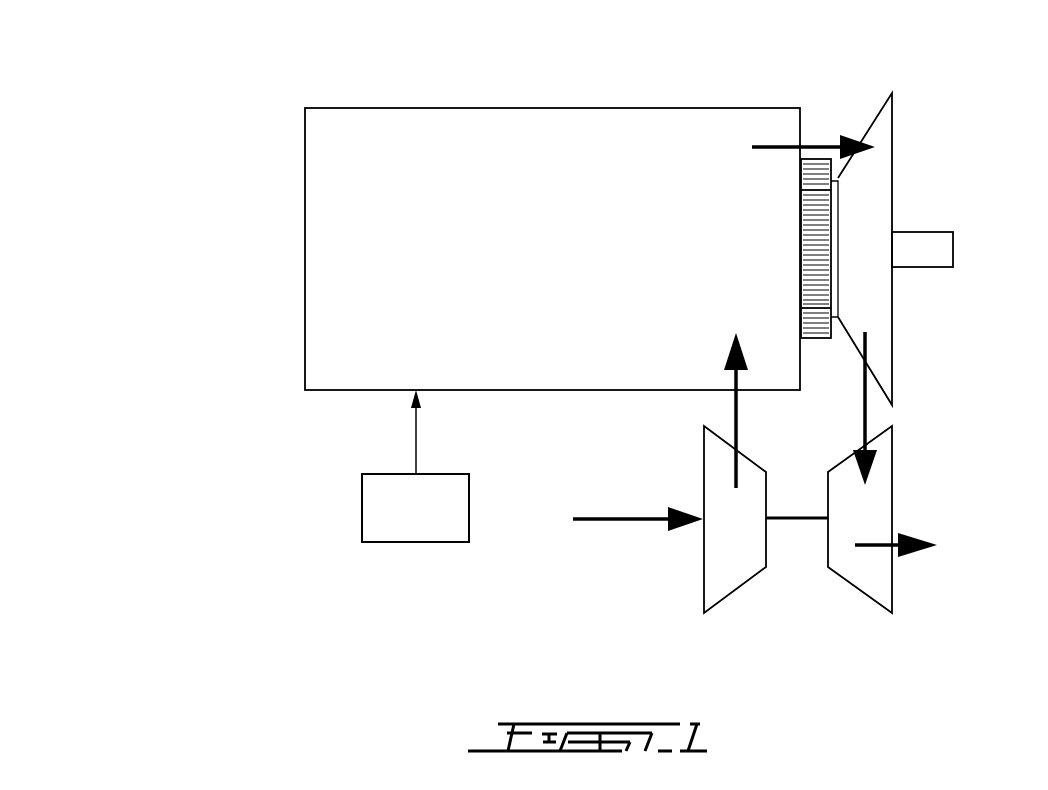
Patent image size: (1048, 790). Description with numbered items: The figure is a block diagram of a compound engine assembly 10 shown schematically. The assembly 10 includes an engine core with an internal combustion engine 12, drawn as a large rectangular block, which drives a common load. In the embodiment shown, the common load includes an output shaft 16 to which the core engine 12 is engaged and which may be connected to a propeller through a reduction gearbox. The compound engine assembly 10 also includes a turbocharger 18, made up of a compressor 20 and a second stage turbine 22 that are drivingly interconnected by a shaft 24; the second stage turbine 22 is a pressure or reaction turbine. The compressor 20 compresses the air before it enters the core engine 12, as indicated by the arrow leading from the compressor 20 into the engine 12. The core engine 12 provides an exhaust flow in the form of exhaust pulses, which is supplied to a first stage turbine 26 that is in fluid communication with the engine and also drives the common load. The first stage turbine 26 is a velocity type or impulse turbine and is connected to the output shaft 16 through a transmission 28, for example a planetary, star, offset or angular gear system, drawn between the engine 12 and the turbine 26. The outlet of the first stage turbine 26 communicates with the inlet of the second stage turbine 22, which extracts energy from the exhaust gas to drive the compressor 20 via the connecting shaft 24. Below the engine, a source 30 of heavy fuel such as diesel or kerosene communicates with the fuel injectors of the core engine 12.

The compound engine assembly 10 is at (226, 158).
The internal combustion engine 12 is at (448, 138).
The output shaft 16 is at (930, 247).
The turbocharger 18 is at (785, 560).
The compressor 20 is at (688, 558).
The second stage turbine 22 is at (876, 519).
The shaft 24 is at (792, 522).
The first stage turbine 26 is at (888, 220).
The transmission 28 is at (808, 210).
The source of heavy fuel 30 is at (413, 527).